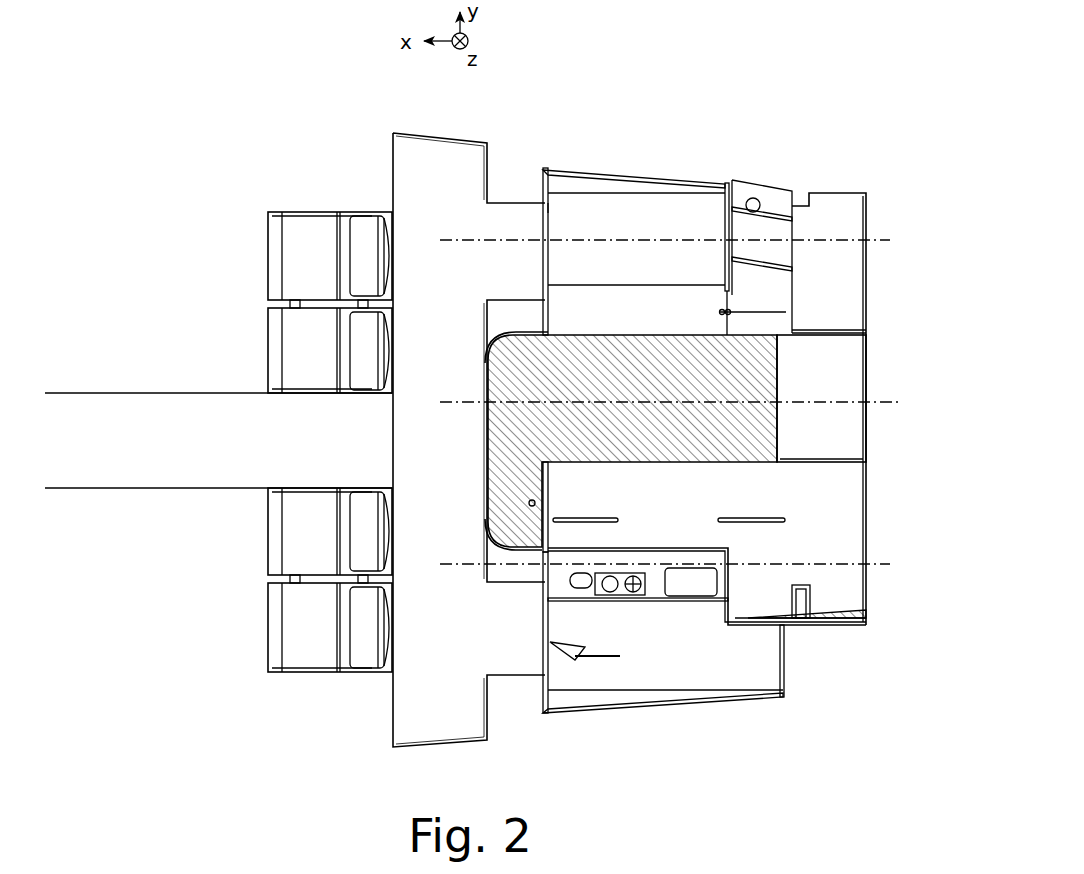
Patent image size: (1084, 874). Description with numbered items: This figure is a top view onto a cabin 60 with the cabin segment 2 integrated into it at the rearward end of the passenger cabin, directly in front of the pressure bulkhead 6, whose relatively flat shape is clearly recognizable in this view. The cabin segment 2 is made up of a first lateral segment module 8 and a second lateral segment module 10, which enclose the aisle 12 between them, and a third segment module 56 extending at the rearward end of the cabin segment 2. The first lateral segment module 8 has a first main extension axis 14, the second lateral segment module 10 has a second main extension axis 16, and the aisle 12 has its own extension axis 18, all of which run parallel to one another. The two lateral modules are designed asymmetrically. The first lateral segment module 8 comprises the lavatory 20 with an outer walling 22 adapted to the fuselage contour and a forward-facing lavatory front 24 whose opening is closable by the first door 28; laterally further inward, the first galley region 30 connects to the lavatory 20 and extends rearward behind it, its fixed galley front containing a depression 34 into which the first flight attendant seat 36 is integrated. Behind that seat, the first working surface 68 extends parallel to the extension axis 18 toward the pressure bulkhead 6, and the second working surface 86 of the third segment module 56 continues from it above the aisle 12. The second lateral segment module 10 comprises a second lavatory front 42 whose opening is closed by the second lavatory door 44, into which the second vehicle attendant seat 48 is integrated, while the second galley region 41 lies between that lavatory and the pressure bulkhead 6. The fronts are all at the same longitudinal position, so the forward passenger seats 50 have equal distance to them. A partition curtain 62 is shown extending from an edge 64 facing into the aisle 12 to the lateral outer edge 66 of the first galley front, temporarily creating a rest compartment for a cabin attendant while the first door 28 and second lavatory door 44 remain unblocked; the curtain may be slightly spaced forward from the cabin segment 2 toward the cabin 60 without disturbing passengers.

The cabin segment 2 is at (832, 157).
The pressure bulkhead 6 is at (868, 344).
The first lateral segment module 8 is at (808, 708).
The second lateral segment module 10 is at (623, 168).
The aisle 12 is at (567, 378).
The first main extension axis 14 is at (890, 565).
The second main extension axis 16 is at (888, 240).
The extension axis 18 is at (892, 402).
The lavatory 20 is at (750, 703).
The outer walling 22 is at (645, 707).
The lavatory front 24 is at (543, 693).
The first door 28 is at (553, 618).
The first galley region 30 is at (863, 640).
The depression 34 is at (552, 470).
The first flight attendant seat 36 is at (532, 483).
The second galley region 41 is at (762, 185).
The second lavatory front 42 is at (543, 180).
The second lavatory door 44 is at (555, 272).
The second vehicle attendant seat 48 is at (545, 213).
The passenger seats 50 is at (262, 355).
The third segment module 56 is at (833, 437).
The cabin 60 is at (188, 259).
The partition curtain 62 is at (500, 330).
The edge 64 is at (553, 330).
The lateral outer edge 66 is at (555, 548).
The first working surface 68 is at (725, 503).
The second working surface 86 is at (801, 383).